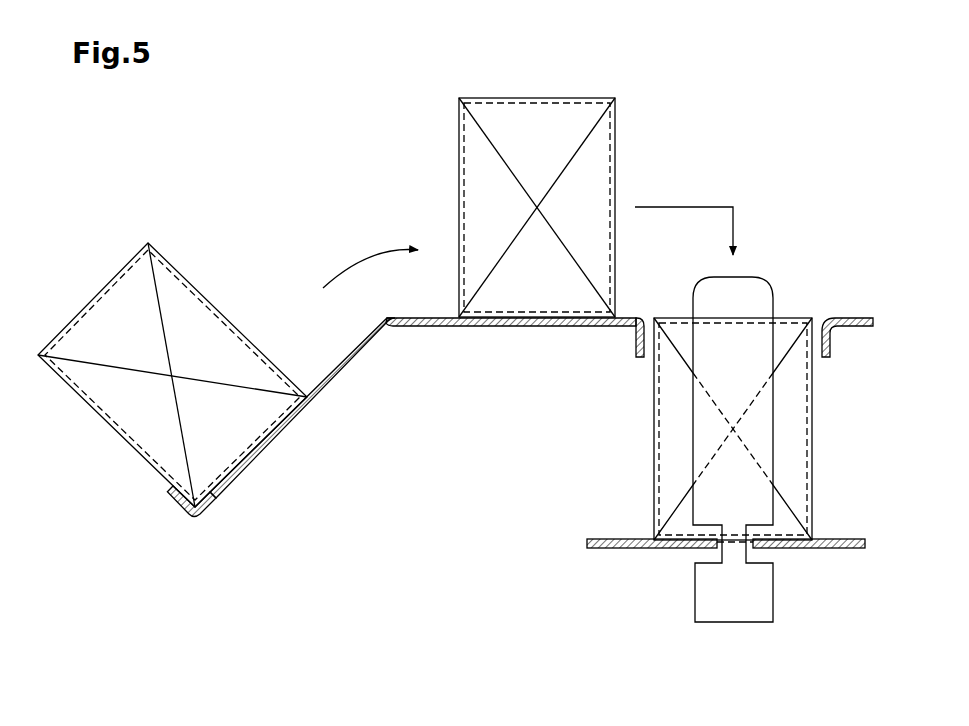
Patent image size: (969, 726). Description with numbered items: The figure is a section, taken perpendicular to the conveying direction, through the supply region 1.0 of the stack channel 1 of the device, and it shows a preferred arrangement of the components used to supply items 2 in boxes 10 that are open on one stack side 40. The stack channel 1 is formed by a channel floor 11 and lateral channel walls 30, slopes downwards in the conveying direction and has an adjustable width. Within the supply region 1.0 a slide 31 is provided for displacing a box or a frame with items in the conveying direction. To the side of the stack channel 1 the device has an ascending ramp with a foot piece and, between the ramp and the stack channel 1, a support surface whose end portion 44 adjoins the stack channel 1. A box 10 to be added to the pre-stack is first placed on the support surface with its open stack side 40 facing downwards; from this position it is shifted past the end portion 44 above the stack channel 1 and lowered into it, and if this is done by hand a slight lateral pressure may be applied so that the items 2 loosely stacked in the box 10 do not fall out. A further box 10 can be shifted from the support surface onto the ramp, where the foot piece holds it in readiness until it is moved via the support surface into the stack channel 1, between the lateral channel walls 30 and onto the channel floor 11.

The box 10 is at (148, 243).
The items 2 is at (202, 297).
The stack side 40 is at (460, 426).
The rail end leg 44 is at (639, 326).
The stack channel 1 is at (821, 302).
The supply region 1.0 is at (733, 180).
The lateral channel walls 30 is at (782, 398).
The slide 31 is at (744, 294).
The channel floor 11 is at (793, 549).